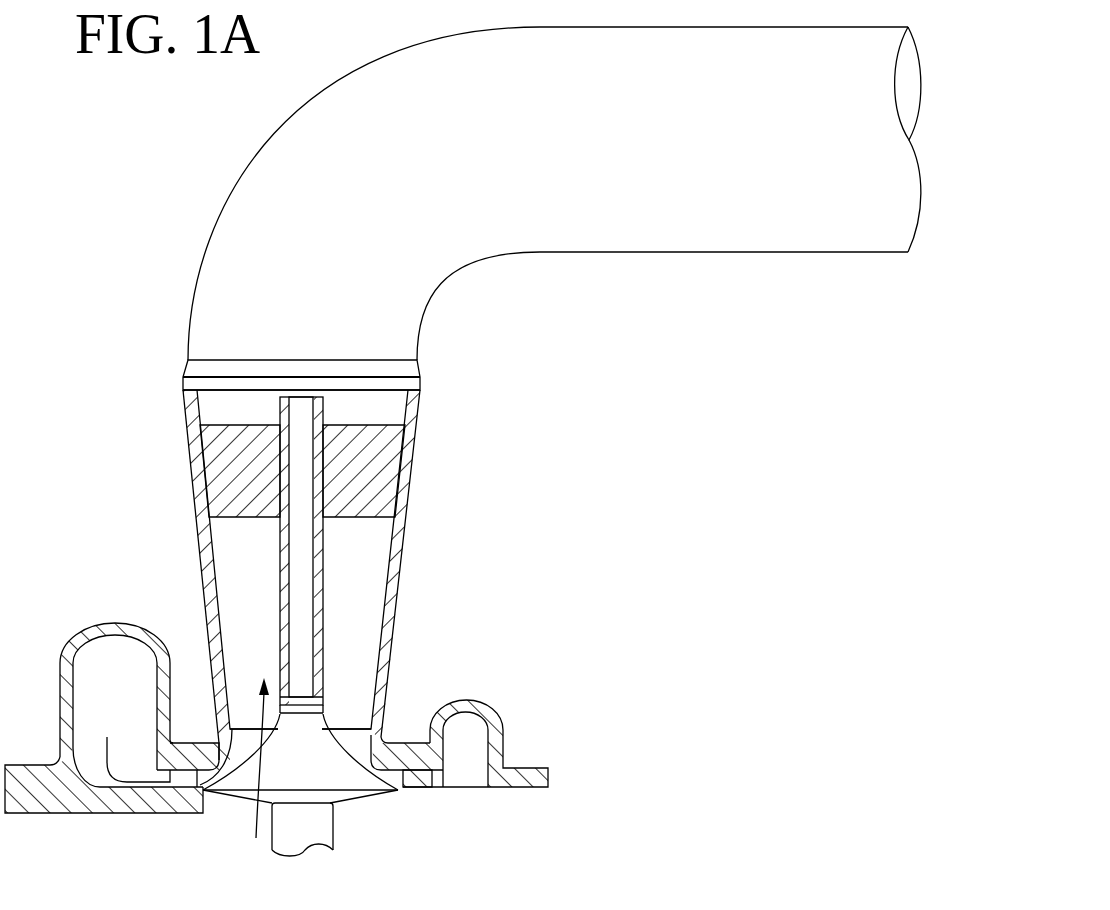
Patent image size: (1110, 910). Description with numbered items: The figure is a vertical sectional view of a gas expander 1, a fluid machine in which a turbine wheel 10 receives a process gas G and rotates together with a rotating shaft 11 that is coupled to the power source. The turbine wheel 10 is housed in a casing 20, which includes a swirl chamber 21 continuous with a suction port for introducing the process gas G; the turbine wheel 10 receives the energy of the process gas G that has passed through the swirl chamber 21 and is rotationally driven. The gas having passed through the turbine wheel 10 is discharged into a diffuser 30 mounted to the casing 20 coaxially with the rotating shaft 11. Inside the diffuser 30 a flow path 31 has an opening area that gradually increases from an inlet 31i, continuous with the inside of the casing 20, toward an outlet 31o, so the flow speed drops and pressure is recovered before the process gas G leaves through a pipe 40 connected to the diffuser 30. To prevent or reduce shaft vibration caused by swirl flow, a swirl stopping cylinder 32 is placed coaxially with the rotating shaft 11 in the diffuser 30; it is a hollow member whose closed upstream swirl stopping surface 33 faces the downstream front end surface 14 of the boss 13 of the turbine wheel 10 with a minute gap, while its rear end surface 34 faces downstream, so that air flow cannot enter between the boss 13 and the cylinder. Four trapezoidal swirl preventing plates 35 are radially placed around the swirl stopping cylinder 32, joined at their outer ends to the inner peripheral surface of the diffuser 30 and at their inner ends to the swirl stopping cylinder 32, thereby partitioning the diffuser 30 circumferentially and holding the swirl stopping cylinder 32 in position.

The gas expander 1 is at (100, 497).
The turbine wheel 10 is at (377, 809).
The rotating shaft 11 is at (333, 833).
The boss 13 is at (256, 838).
The downstream front end surface 14 is at (333, 723).
The casing 20 is at (78, 631).
The swirl chamber 21 is at (129, 706).
The diffuser 30 is at (418, 474).
The flow path 31 is at (264, 600).
The outlet 31o is at (420, 390).
The inlet 31i is at (390, 722).
The swirl stopping cylinder 32 is at (323, 560).
The swirl stopping surface 33 is at (300, 708).
The rear end surface 34 is at (317, 397).
The swirl preventing plate 35 is at (363, 517).
The pipe 40 is at (672, 252).
The process gas G is at (262, 712).